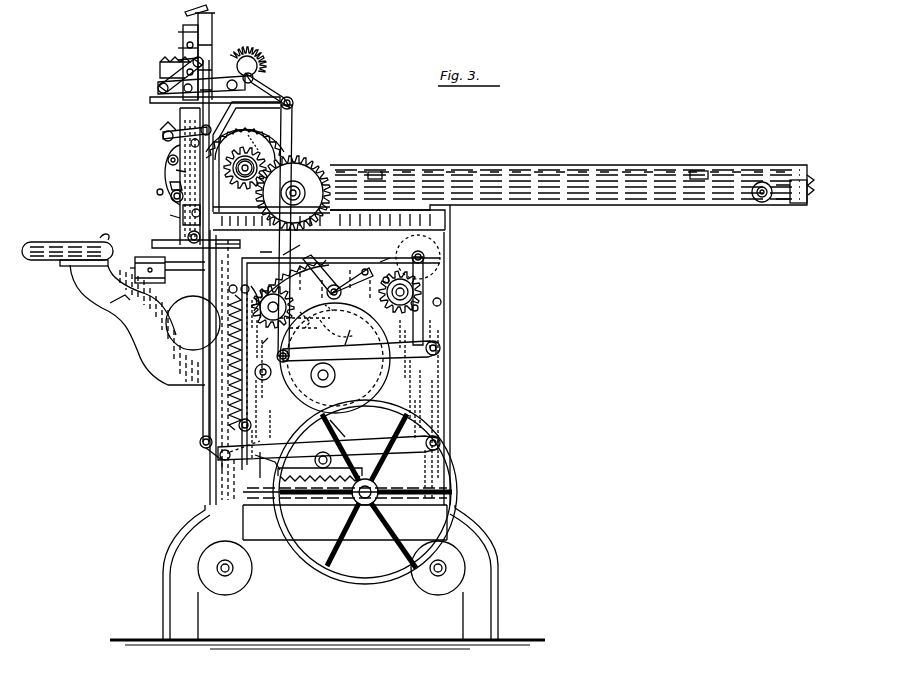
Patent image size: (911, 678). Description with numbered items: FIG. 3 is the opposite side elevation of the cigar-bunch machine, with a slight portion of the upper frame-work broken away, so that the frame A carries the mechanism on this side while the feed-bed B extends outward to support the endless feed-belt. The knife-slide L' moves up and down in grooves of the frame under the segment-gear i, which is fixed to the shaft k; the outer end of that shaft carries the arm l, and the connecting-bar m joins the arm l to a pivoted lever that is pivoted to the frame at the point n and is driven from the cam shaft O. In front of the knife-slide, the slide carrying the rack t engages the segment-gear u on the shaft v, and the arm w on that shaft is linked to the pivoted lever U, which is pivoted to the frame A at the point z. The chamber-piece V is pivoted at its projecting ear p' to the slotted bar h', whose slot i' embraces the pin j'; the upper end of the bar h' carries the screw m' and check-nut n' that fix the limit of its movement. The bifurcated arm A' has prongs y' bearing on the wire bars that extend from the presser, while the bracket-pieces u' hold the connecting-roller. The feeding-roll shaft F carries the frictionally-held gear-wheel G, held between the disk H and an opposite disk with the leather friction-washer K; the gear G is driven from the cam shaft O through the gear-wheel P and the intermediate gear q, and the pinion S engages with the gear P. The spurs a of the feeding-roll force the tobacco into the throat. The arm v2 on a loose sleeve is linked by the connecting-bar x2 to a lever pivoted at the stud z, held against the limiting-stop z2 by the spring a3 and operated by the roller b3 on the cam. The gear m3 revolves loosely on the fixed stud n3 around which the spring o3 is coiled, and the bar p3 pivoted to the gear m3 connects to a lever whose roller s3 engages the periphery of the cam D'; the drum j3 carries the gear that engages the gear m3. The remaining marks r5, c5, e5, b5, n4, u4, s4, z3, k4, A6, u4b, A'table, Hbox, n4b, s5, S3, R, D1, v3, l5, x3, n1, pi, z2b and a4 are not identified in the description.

The frame A is at (327, 375).
The feed-bed B is at (572, 187).
The knife-slide L' is at (217, 56).
The vertical rod r5 is at (240, 422).
The check-nut n' is at (179, 52).
The screw m' is at (198, 8).
The slot i' is at (178, 27).
The arm w is at (183, 46).
The pin or stud j' is at (184, 47).
The shaft v is at (158, 87).
The segment-gear u is at (175, 74).
The segment-gear i is at (249, 61).
The arm l is at (275, 90).
The shaft k is at (280, 98).
The cam D' is at (298, 230).
The shaft F is at (305, 166).
The shaft c5 is at (315, 173).
The hub e5 is at (298, 193).
The gear-wheel G is at (243, 135).
The spurs a is at (262, 140).
The disk H is at (250, 134).
The hub b5 is at (240, 176).
The bifurcated arm A' is at (169, 176).
The limiting-stop z2 is at (182, 127).
The arm v2 is at (192, 138).
The bracket-pieces u' is at (159, 164).
The slotted bar h' is at (178, 167).
The slide n4 is at (177, 182).
The pin u4 is at (157, 192).
The roller s4 is at (171, 198).
The prongs y' is at (165, 216).
The chamber-piece V is at (189, 213).
The projecting ear p' is at (182, 222).
The roller z3 is at (188, 238).
The bar k4 is at (231, 237).
The connecting-bar m is at (279, 246).
The bracket A6 is at (125, 300).
The connecting-bar x2 is at (193, 323).
The pin u4b is at (121, 302).
The table A'table is at (79, 250).
The guide block Hbox is at (166, 270).
The slide n4b is at (130, 268).
The pin s5 is at (151, 265).
The spring S3 is at (245, 282).
The intermediate gear-wheel q is at (255, 294).
The spring a3 is at (284, 285).
The ratchet wheel R is at (275, 338).
The cam shaft O is at (330, 378).
The pin D1 is at (304, 321).
The friction-washer K is at (332, 302).
The bell crank v3 is at (338, 269).
The drum j3 is at (367, 268).
The arm l5 is at (389, 250).
The gear m3 is at (397, 284).
The spring o3 is at (381, 279).
The fixed stud n3 is at (410, 296).
The bar p3 is at (420, 333).
The pin x3 is at (421, 307).
The pivot point n is at (366, 350).
The arm n1 is at (342, 355).
The roller b3 is at (271, 372).
The arm pi is at (261, 346).
The pinion S is at (378, 490).
The pivot stud z is at (440, 444).
The pivot z2b is at (214, 446).
The pin or roller s3 is at (340, 428).
The roller a4 is at (315, 460).
The rack t is at (264, 465).
The pivoted lever U is at (266, 470).
The gear-wheel P is at (347, 483).